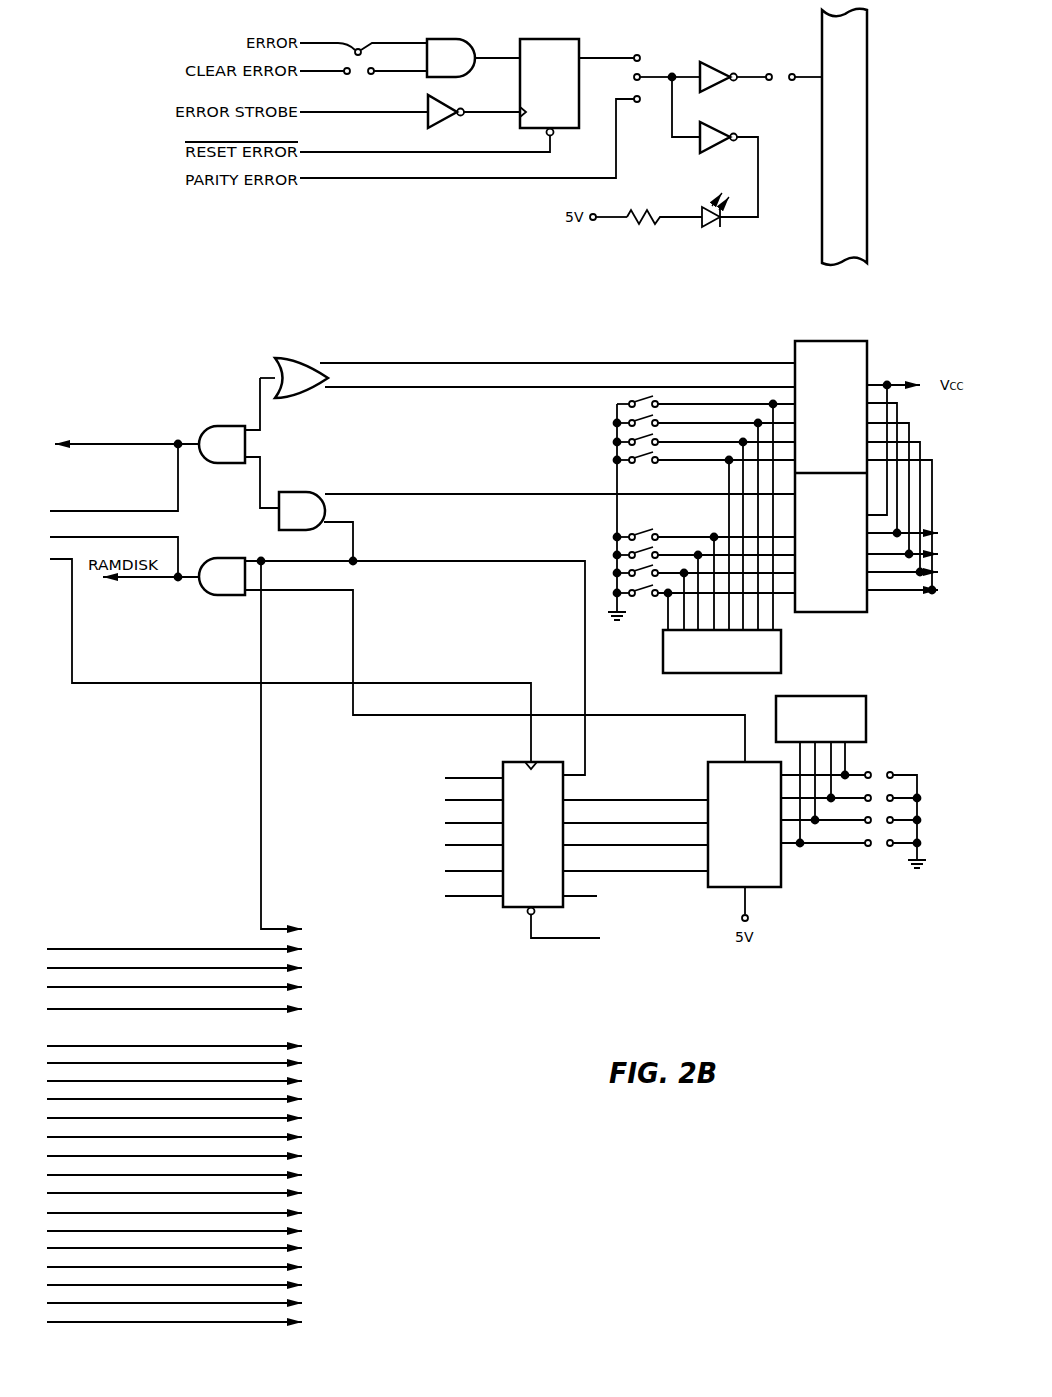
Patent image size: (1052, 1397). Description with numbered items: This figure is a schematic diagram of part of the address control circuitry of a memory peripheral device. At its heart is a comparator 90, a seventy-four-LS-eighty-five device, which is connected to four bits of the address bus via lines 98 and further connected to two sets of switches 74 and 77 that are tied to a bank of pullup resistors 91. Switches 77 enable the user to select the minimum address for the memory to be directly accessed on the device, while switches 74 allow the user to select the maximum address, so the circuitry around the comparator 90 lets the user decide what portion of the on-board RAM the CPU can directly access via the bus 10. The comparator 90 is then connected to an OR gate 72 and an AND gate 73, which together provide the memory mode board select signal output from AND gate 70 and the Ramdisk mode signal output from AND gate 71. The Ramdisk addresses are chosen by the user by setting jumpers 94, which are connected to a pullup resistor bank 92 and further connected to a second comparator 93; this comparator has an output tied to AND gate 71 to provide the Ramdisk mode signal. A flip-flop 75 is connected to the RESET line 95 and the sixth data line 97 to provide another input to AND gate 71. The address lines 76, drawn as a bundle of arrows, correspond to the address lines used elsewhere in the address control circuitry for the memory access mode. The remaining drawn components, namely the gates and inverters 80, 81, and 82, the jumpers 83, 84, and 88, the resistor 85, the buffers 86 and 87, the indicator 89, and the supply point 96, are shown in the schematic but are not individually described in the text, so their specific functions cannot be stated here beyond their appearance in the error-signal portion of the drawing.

The bus 10 is at (868, 44).
The AND gate 70 is at (164, 444).
The AND gate 71 is at (397, 656).
The OR gate 72 is at (527, 378).
The AND gate 73 is at (537, 526).
The switches 74 is at (623, 598).
The flip-flop 75 is at (605, 834).
The address lines 76 is at (325, 918).
The switches 77 is at (623, 465).
The AND gate 80 is at (473, 58).
The inverter 81 is at (445, 123).
The flip-flop 82 is at (596, 87).
The jumper 83 is at (340, 77).
The jumper 84 is at (618, 44).
The resistor 85 is at (640, 226).
The buffer 86 is at (715, 62).
The buffer 87 is at (720, 112).
The jumper 88 is at (760, 82).
The light emitting diode 89 is at (712, 226).
The comparator 90 is at (832, 341).
The bank of pullup resistors 91 is at (722, 537).
The pullup resistor bank 92 is at (821, 771).
The comparator 93 is at (786, 841).
The jumpers 94 is at (858, 851).
The RESET line 95 is at (562, 940).
The supply terminal 96 is at (606, 224).
The sixth data line 97 is at (438, 768).
The lines 98 is at (953, 527).